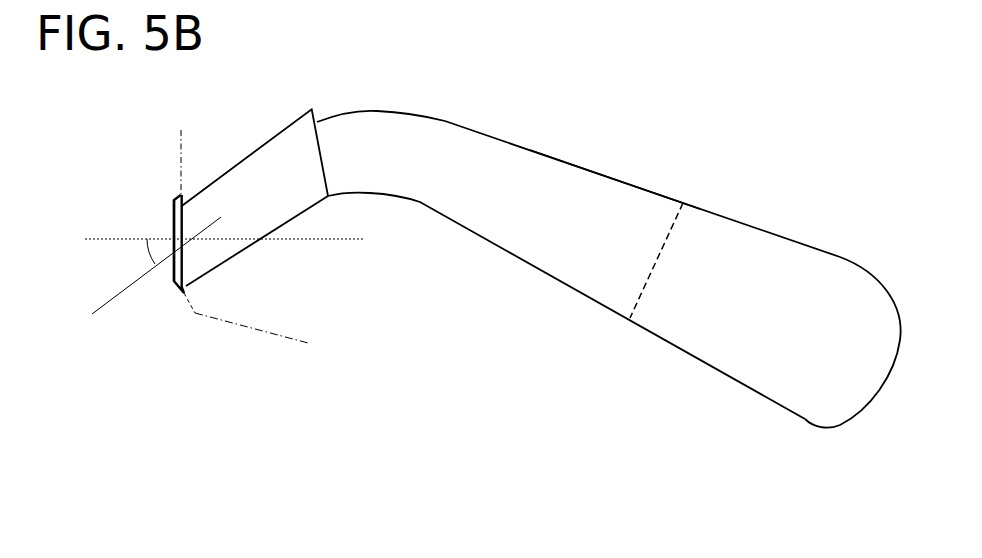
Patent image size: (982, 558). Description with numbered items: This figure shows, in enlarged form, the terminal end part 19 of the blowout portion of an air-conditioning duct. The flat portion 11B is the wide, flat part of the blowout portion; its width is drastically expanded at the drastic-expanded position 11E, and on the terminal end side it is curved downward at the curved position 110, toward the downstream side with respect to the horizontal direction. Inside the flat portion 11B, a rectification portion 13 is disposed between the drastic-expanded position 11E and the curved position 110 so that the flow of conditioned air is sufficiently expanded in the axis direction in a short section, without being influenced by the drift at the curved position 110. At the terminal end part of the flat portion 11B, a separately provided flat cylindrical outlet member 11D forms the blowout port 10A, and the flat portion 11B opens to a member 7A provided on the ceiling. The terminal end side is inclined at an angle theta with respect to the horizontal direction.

The curved position 110 is at (390, 111).
The flat portion 11B is at (598, 168).
The drastic-expanded position 11E is at (870, 403).
The rectification portion 13 is at (680, 227).
The flat cylindrical outlet member 11D is at (233, 162).
The terminal end part 19 is at (173, 208).
The blowout port 10A is at (173, 220).
The member 7A is at (193, 312).